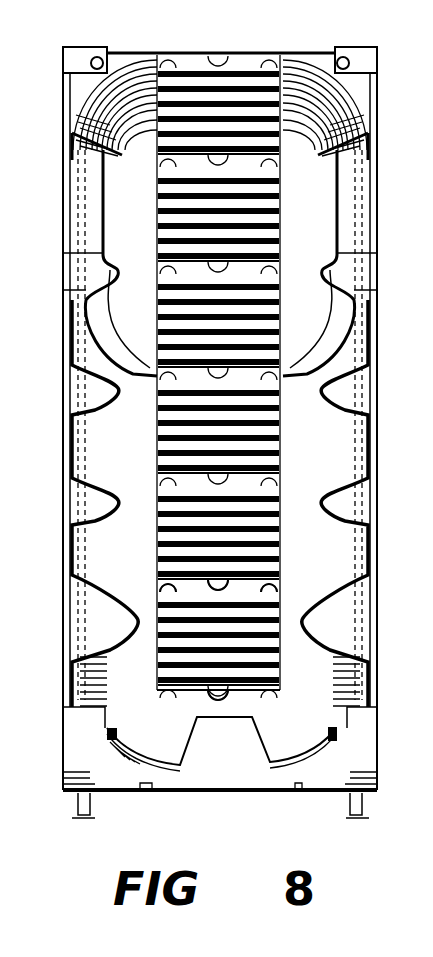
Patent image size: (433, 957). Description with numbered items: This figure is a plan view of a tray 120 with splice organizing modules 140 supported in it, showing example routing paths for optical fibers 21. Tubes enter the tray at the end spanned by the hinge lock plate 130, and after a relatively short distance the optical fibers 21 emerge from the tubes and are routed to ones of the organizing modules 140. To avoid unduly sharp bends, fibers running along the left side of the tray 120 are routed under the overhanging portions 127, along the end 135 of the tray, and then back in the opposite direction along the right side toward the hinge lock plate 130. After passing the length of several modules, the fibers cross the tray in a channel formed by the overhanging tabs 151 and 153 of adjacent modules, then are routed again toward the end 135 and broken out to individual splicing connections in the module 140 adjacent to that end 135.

The optical fibers 21 is at (150, 154).
The tray 120 is at (203, 795).
The overhanging portions 127 is at (93, 497).
The hinge lock plate 130 is at (235, 795).
The end of the tray 135 is at (298, 50).
The splicing module 140 is at (162, 300).
The overhanging tab 151 is at (282, 543).
The overhanging tabs 153 is at (167, 590).